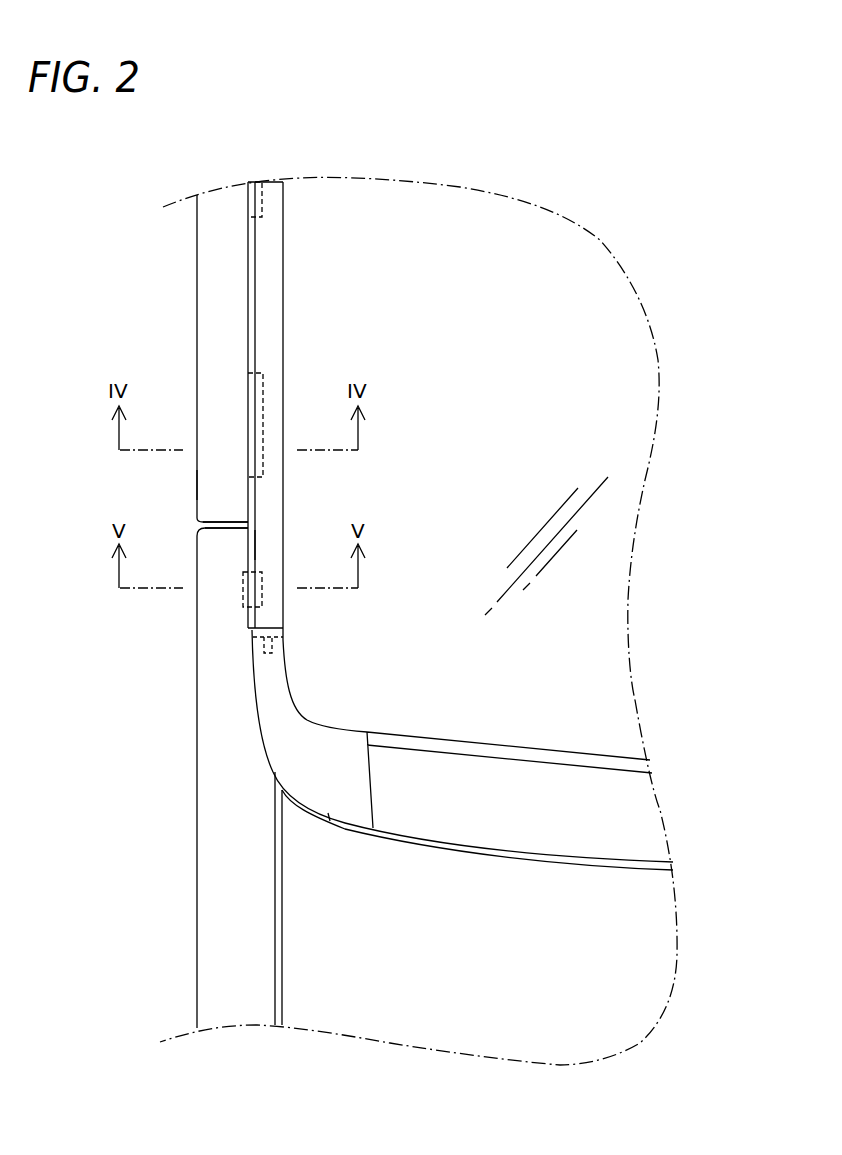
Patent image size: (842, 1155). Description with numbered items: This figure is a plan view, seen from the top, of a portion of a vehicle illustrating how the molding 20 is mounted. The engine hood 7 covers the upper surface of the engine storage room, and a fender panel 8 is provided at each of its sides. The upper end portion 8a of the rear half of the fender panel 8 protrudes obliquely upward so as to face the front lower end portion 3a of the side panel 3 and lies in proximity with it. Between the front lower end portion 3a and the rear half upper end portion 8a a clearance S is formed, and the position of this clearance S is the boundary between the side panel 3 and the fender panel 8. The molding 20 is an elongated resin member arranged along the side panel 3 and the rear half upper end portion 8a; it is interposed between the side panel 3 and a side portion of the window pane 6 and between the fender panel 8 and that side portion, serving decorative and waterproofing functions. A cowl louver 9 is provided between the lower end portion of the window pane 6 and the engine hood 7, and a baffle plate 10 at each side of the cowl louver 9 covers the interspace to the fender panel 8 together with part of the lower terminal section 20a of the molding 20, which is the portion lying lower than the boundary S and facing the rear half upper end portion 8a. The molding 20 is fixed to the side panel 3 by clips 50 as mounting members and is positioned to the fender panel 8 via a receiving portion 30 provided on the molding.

The side panel 3 is at (197, 265).
The front lower end portion of the side panel 3a is at (220, 480).
The clearance S is at (176, 531).
The window pane 6 is at (555, 262).
The engine hood 7 is at (642, 985).
The fender panel 8 is at (197, 938).
The upper end portion of the fender panel rear half portion 8a is at (213, 592).
The cowl louver 9 is at (626, 826).
The baffle plate 10 is at (288, 742).
The molding 20 is at (267, 268).
The lower terminal section of the molding 20a is at (270, 543).
The receiving portion 30 is at (238, 597).
The clip 50 is at (262, 200).